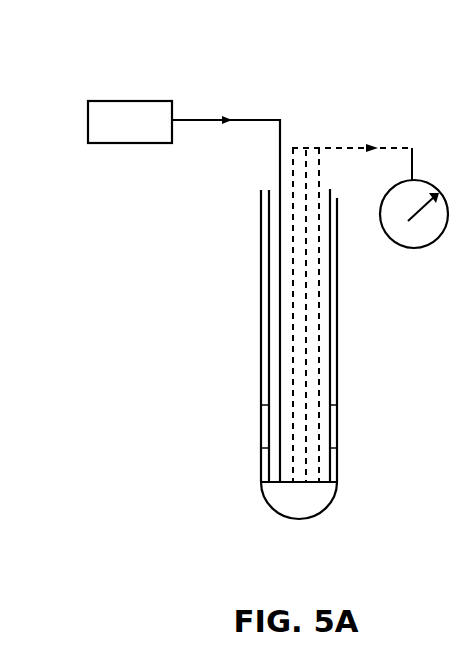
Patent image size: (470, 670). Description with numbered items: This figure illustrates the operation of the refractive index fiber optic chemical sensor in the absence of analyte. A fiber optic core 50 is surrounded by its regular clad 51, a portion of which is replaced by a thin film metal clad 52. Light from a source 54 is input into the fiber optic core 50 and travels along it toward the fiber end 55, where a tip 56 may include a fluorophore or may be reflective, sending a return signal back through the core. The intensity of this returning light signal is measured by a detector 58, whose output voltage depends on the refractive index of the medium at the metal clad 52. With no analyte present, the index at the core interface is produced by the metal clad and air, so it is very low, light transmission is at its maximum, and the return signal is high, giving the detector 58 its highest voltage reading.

The source 54 is at (125, 91).
The fiber optic core 50 is at (247, 315).
The regular clad 51 is at (253, 335).
The thin film metal clad 52 is at (257, 336).
The end 55 is at (325, 515).
The tip 56 is at (266, 521).
The detector 58 is at (425, 247).